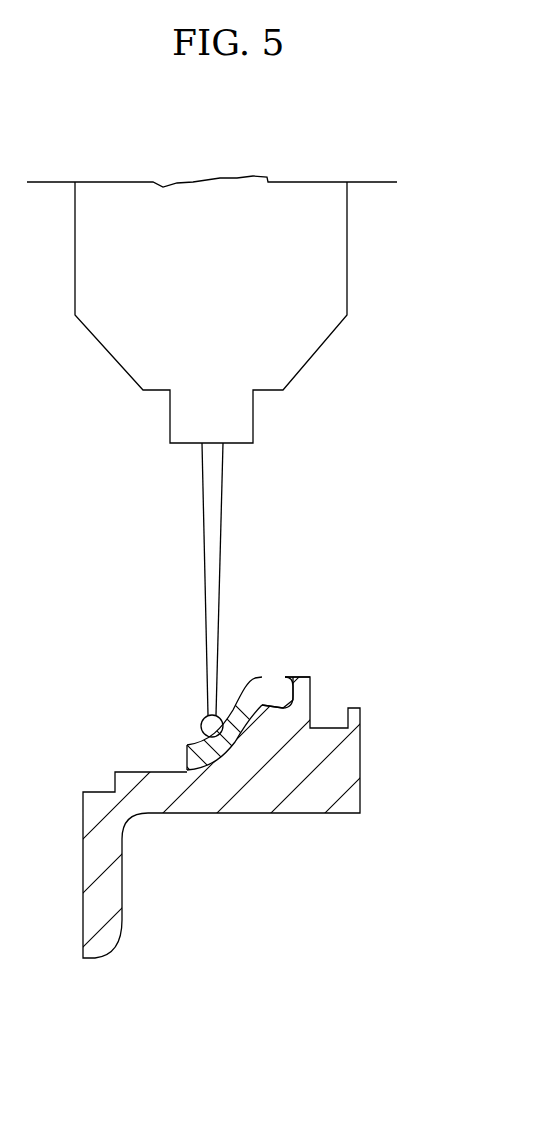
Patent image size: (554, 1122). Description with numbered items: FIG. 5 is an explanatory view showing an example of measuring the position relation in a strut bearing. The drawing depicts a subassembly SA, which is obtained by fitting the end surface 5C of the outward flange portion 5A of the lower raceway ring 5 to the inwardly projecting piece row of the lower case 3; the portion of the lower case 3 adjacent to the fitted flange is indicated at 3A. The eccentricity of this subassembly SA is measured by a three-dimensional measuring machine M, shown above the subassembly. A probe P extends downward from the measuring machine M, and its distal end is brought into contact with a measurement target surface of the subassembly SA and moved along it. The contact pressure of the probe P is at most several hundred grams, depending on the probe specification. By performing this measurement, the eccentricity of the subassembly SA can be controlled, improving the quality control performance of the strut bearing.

The three-dimensional measuring machine M is at (358, 263).
The probe P is at (202, 542).
The lower case 3 is at (373, 773).
The hole / recess (B) in workpiece 3A is at (253, 708).
The lower raceway ring 5 is at (218, 740).
The outward flange portion 5A is at (255, 678).
The end surface 5C is at (297, 677).
The subassembly SA is at (324, 674).